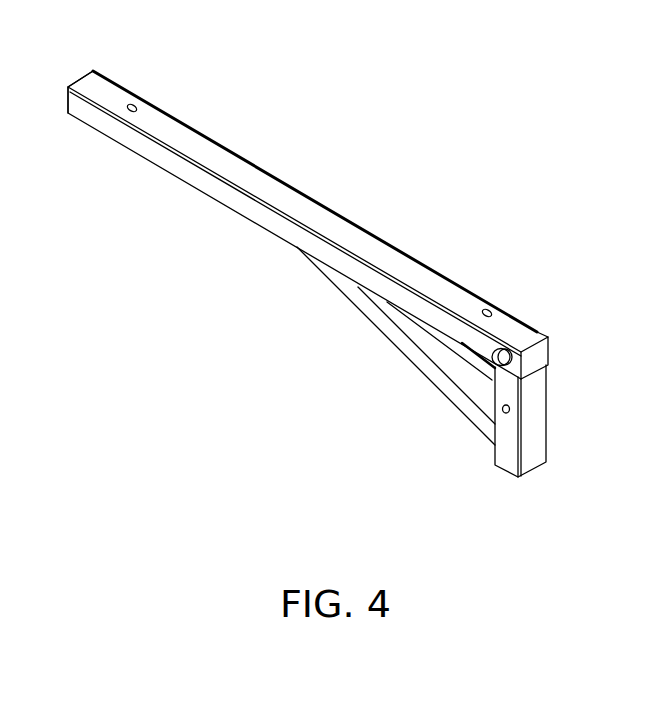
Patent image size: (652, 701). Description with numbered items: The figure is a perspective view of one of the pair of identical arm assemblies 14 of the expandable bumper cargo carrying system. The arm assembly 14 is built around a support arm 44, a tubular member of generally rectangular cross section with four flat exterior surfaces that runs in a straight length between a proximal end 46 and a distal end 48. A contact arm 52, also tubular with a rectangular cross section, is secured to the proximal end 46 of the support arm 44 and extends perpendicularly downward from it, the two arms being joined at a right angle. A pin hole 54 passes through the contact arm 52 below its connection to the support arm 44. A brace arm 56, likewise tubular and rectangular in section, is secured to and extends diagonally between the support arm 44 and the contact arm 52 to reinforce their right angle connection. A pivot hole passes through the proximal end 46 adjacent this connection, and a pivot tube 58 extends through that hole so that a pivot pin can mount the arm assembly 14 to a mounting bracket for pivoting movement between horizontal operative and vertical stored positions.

The arm assembly 14 is at (384, 166).
The support arm 44 is at (213, 187).
The distal end 48 is at (102, 88).
The proximal end 46 is at (536, 331).
The pivot tube 58 is at (500, 347).
The contact arm 52 is at (508, 453).
The pin hole 54 is at (512, 411).
The brace arm 56 is at (427, 368).